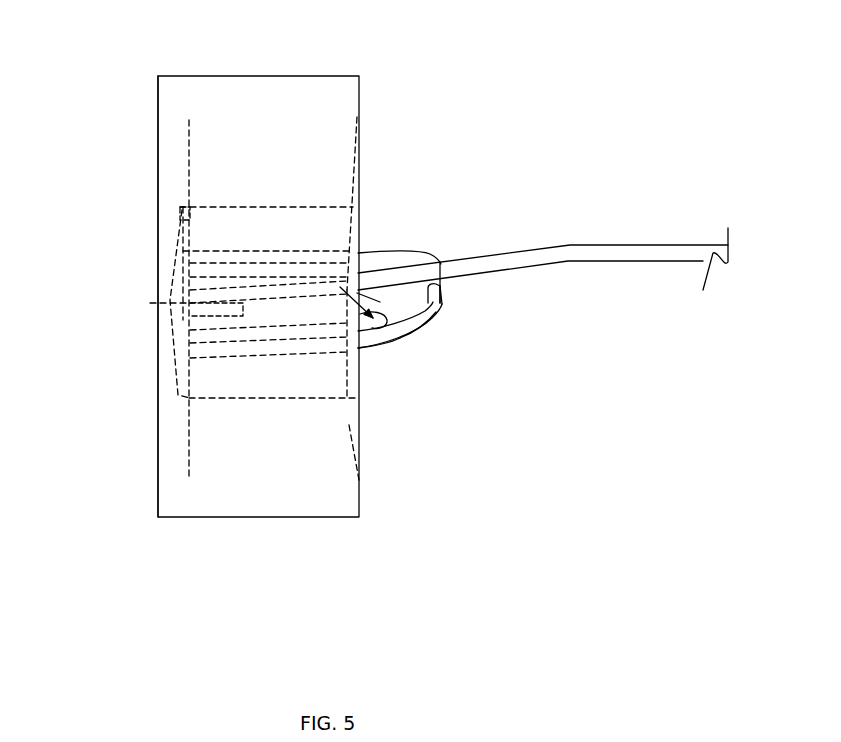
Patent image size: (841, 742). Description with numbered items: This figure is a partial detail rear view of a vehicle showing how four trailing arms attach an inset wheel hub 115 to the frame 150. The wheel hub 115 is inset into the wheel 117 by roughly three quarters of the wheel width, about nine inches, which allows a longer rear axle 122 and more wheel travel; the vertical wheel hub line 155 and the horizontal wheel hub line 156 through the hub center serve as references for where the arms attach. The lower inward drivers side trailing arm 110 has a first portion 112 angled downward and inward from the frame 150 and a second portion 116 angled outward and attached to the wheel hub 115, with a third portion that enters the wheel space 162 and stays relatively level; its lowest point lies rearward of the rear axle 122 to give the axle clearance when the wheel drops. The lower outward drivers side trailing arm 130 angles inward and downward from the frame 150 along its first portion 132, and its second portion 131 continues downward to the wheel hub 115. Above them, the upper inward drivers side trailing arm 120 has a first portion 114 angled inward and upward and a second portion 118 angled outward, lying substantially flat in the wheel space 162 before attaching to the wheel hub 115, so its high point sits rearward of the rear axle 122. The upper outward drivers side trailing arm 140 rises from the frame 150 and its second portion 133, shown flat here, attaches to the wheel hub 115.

The second portion 118 is at (192, 253).
The second portion 133 is at (280, 273).
The upper outward drivers side trailing arm 140 is at (333, 242).
The upper inward drivers side trailing arm 120 is at (402, 247).
The first portion 132 is at (393, 308).
The lower outward drivers side trailing arm 130 is at (430, 262).
The first portion 114 is at (443, 263).
The vertical wheel hub line 155 is at (190, 160).
The wheel hub 115 is at (185, 270).
The horizontal wheel hub line 156 is at (150, 307).
The wheel 117 is at (158, 498).
The second portion 116 is at (190, 357).
The second portion 131 is at (223, 340).
The wheel space 162 is at (323, 377).
The lower inward drivers side trailing arm 110 is at (390, 340).
The first portion 112 is at (442, 297).
The frame 150 is at (443, 284).
The rear axle 122 is at (600, 261).